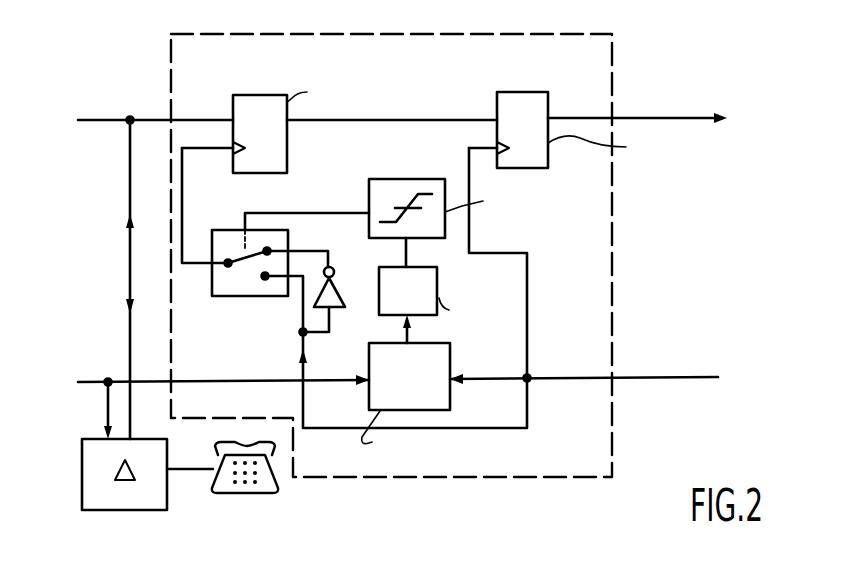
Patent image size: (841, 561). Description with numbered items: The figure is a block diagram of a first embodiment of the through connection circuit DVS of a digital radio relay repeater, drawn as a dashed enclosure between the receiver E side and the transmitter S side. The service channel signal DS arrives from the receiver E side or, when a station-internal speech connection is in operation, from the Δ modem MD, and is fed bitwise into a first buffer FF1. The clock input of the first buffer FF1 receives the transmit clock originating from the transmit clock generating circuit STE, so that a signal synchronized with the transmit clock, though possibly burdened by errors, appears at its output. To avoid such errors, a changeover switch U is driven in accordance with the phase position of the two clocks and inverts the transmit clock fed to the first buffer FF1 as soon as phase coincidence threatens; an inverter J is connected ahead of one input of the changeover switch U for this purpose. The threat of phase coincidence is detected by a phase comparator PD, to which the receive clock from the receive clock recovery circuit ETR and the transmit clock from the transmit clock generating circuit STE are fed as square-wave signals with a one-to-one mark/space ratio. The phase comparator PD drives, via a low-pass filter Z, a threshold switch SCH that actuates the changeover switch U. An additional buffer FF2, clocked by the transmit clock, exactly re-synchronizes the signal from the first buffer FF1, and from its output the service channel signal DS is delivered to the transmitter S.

The first buffer FF1 is at (264, 95).
The additional buffer FF2 is at (520, 92).
The threshold switch SCH is at (402, 179).
The low-pass filter Z is at (440, 293).
The phase comparator PD is at (450, 358).
The changeover switch U is at (248, 296).
The inverter J is at (333, 287).
The through connection circuit DVS is at (617, 270).
The Δ modem MD is at (164, 510).
The receiver E is at (140, 120).
The transmitter S is at (734, 118).
The service channel signal DS is at (415, 98).
The receive clock recovery circuit ETR is at (197, 402).
The transmit clock generating circuit STE is at (611, 377).